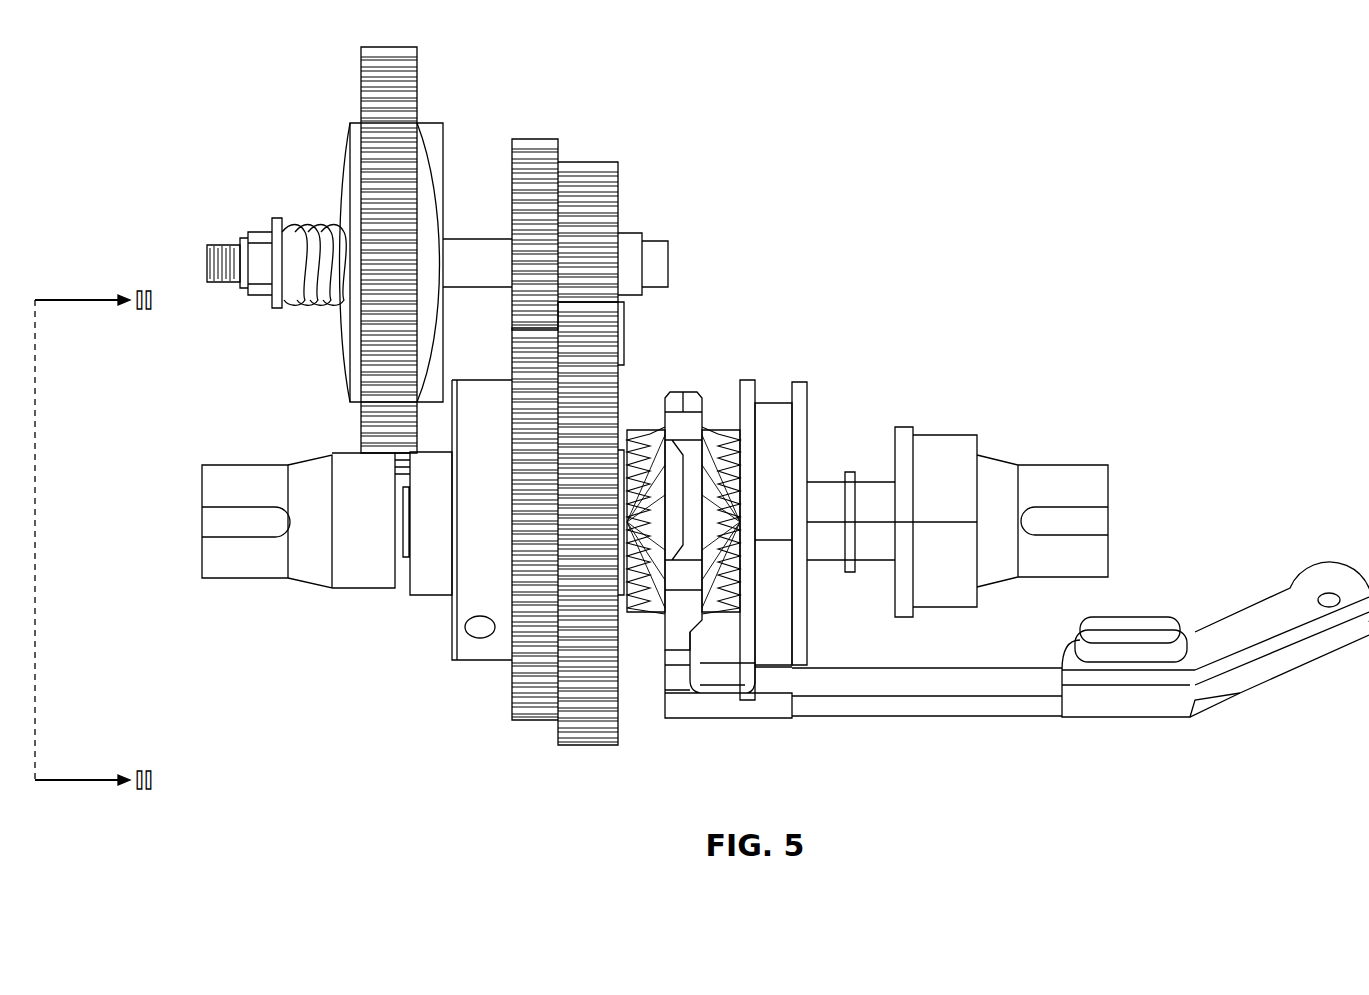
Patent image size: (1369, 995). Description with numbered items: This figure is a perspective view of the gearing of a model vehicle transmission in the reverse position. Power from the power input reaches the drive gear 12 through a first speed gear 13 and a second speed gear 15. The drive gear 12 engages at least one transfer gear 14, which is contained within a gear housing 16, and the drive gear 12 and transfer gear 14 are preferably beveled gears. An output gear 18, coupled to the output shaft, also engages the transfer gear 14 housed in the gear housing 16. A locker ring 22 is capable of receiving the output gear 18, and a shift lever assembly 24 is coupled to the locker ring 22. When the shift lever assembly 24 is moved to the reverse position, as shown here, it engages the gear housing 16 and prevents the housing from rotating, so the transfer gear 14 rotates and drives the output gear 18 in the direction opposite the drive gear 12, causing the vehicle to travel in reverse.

The drive gear 12 is at (632, 592).
The first speed gear 13 is at (620, 115).
The transfer gear 14 is at (735, 585).
The second speed gear 15 is at (620, 760).
The gear housing 16 is at (680, 386).
The output gear 18 is at (750, 398).
The locker ring 22 is at (808, 414).
The shift lever assembly 24 is at (896, 713).